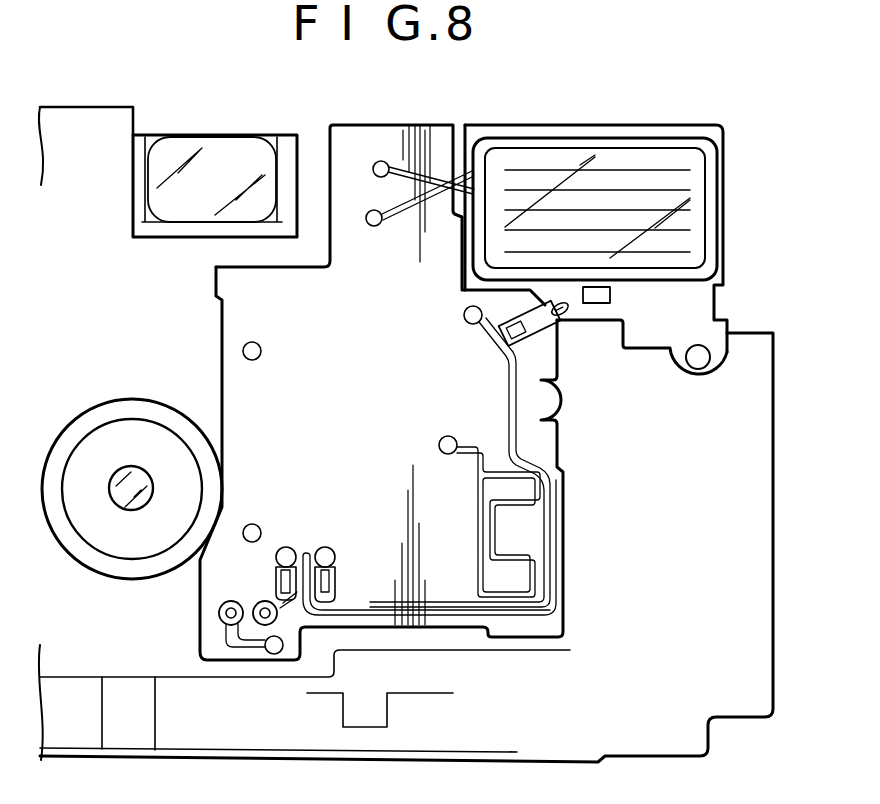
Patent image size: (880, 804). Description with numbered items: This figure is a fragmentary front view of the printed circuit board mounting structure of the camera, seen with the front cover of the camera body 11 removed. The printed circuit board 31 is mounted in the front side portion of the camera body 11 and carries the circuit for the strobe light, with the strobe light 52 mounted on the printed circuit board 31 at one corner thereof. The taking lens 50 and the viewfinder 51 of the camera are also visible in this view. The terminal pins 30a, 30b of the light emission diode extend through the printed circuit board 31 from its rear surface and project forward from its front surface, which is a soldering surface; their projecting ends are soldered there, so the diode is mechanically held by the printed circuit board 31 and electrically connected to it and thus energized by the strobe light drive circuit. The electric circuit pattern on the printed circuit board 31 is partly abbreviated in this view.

The camera body 11 is at (747, 520).
The printed circuit board 31 is at (370, 443).
The viewfinder 51 is at (230, 158).
The strobe light 52 is at (655, 177).
The taking lens 50 is at (137, 500).
The terminal pin 30a is at (222, 627).
The terminal pin 30b is at (258, 627).